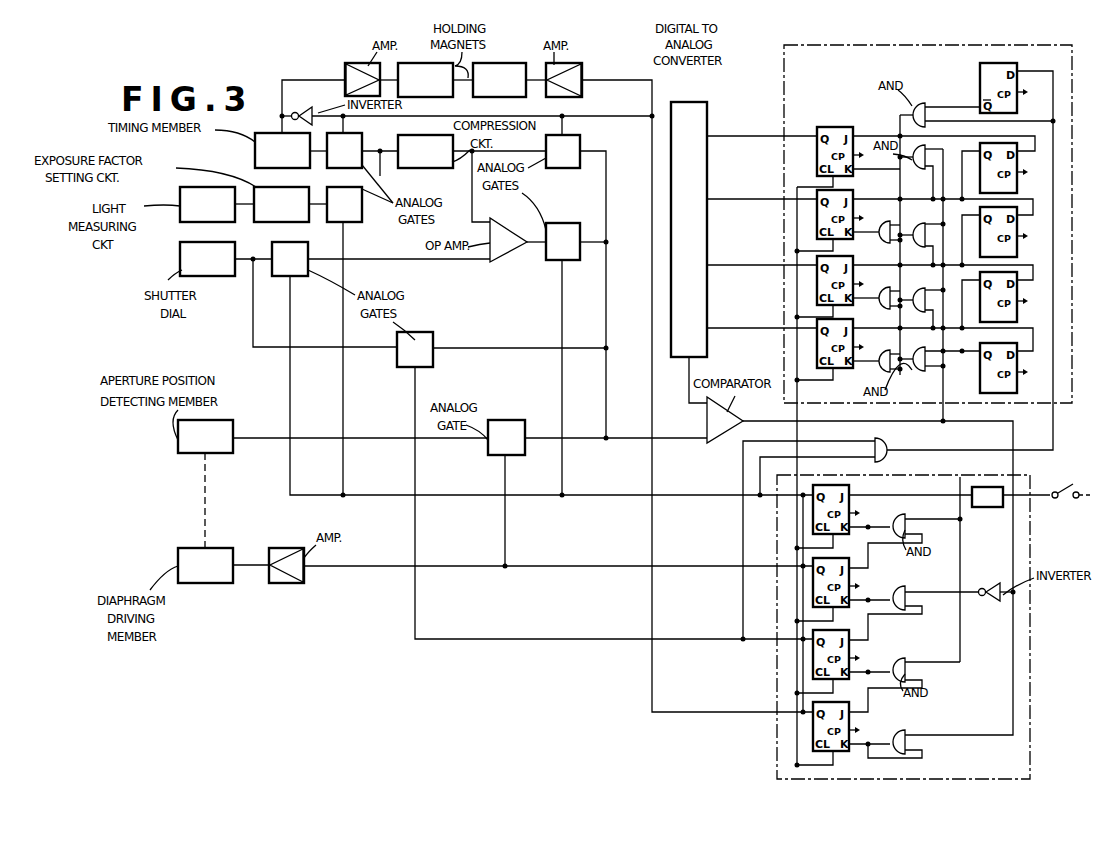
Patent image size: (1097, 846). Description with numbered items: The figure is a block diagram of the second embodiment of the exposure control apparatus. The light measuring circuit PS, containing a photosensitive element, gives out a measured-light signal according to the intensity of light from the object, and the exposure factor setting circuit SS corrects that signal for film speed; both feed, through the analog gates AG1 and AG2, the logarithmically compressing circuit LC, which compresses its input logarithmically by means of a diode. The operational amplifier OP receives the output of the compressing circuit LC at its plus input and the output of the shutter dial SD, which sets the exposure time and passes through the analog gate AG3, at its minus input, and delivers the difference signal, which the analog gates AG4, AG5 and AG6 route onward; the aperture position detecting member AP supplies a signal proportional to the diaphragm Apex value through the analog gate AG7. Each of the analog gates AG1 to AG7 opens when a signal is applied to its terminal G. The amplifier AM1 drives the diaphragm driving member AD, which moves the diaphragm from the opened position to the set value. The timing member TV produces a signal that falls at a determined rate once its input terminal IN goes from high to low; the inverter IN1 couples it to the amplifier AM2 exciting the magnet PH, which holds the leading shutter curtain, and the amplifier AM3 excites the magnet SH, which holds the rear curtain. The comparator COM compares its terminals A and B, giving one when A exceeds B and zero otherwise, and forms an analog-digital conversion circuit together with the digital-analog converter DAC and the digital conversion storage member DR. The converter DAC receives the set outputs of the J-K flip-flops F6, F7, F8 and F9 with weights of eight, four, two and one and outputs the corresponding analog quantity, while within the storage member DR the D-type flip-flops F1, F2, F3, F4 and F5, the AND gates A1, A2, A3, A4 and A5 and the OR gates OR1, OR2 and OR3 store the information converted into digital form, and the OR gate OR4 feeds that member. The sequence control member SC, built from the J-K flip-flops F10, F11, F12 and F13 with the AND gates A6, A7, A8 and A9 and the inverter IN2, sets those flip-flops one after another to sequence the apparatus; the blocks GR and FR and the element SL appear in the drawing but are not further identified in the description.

The amplifier AM1 is at (283, 583).
The amplifier AM2 is at (350, 65).
The amplifier AM3 is at (578, 67).
The magnet PH is at (425, 80).
The magnet SH is at (499, 80).
The inverter IN1 is at (296, 110).
The inverter IN2 is at (984, 597).
The timing member TV is at (255, 152).
The analog gate AG1 is at (358, 222).
The analog gate AG2 is at (369, 161).
The analog gate AG3 is at (310, 276).
The analog gate AG4 is at (425, 332).
The analog gate AG5 is at (549, 168).
The analog gate AG6 is at (546, 258).
The analog gate AG7 is at (505, 420).
The logarithmically compressing circuit LC is at (425, 151).
The light measuring circuit PS is at (207, 204).
The exposure factor setting circuit SS is at (281, 204).
The shutter dial SD is at (207, 259).
The operational amplifier OP is at (498, 262).
The digital-analog converter DAC is at (679, 104).
The comparator COM is at (719, 443).
The aperture position detecting member AP is at (205, 436).
The diaphragm driving member AD is at (205, 565).
The D-type flip-flop F1 is at (1017, 96).
The D-type flip-flop F2 is at (1017, 176).
The D-type flip-flop F3 is at (1017, 240).
The D-type flip-flop F4 is at (1017, 307).
The D-type flip-flop F5 is at (1017, 378).
The J-K type flip-flop F6 is at (848, 127).
The J-K type flip-flop F7 is at (848, 190).
The J-K type flip-flop F8 is at (848, 256).
The J-K type flip-flop F9 is at (848, 319).
The J-K type flip-flop F10 is at (848, 493).
The J-K type flip-flop F11 is at (850, 575).
The J-K type flip-flop F12 is at (850, 647).
The J-K type flip-flop F13 is at (850, 719).
The AND gate A1 is at (921, 108).
The AND gate A2 is at (929, 157).
The AND gate A3 is at (923, 226).
The AND gate A4 is at (923, 291).
The AND gate A5 is at (918, 371).
The AND gate A6 is at (898, 517).
The AND gate A7 is at (903, 586).
The AND gate A8 is at (903, 666).
The AND gate A9 is at (903, 731).
The OR gate OR1 is at (886, 226).
The OR gate OR2 is at (886, 292).
The OR gate OR3 is at (886, 355).
The OR gate OR4 is at (886, 447).
The digital conversion storage member DR is at (1072, 403).
The gate circuit GR is at (786, 780).
The sequence control member SC is at (1028, 762).
The clock pulse generator FR is at (983, 507).
The switch SL is at (1057, 500).